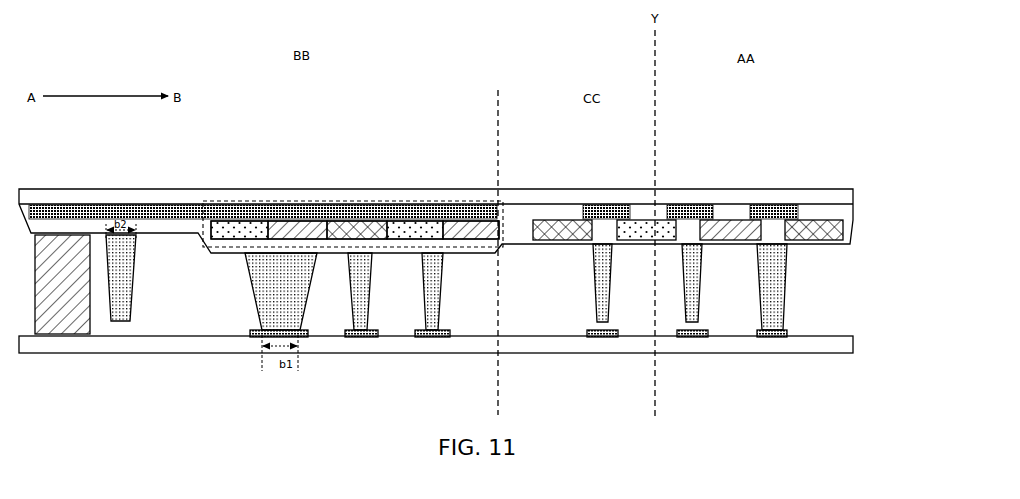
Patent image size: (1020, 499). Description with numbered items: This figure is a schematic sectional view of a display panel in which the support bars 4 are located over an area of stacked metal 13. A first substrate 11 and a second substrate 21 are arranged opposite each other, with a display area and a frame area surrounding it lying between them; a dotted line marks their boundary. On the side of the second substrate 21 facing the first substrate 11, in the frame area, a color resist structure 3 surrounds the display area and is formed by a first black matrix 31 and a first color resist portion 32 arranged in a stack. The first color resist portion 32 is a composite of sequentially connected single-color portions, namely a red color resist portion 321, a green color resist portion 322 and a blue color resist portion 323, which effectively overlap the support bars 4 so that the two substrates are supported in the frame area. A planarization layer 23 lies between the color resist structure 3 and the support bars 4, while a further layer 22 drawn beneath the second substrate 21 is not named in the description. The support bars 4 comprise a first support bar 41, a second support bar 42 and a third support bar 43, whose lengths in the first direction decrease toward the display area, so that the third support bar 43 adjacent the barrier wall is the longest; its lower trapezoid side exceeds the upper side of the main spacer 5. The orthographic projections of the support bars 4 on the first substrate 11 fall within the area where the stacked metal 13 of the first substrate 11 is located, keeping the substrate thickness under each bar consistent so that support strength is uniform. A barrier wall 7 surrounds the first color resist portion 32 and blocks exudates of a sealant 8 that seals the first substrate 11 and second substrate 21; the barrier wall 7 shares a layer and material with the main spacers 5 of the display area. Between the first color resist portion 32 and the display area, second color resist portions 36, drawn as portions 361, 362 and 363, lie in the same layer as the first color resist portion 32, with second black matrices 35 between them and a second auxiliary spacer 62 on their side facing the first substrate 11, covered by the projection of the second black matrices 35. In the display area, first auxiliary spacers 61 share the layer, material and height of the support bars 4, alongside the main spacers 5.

The color resist structure 3 is at (457, 201).
The first black matrix 31 is at (408, 230).
The first color resist portion 32 is at (297, 183).
The red color resist portion 321 is at (254, 233).
The green color resist portion 322 is at (301, 233).
The blue color resist portion 323 is at (351, 233).
The second black matrix 35 is at (592, 220).
The second color resist portion 36 is at (678, 183).
The first conductive sub-layer 361 is at (633, 222).
The second conductive sub-layer 362 is at (731, 228).
The third conductive sub-layer 363 is at (556, 225).
The second substrate 21 is at (827, 197).
The black matrix layer 22 is at (827, 212).
The planarization layer 23 is at (848, 230).
The first substrate 11 is at (827, 343).
The sealant 8 is at (63, 310).
The barrier wall 7 is at (122, 321).
The support bar 4 is at (348, 330).
The first support bar 41 is at (433, 310).
The second support bar 42 is at (362, 310).
The third support bar 43 is at (270, 310).
The stacked metal 13 is at (353, 338).
The main spacer 5 is at (766, 315).
The first auxiliary spacer 61 is at (695, 322).
The second auxiliary spacer 62 is at (604, 322).